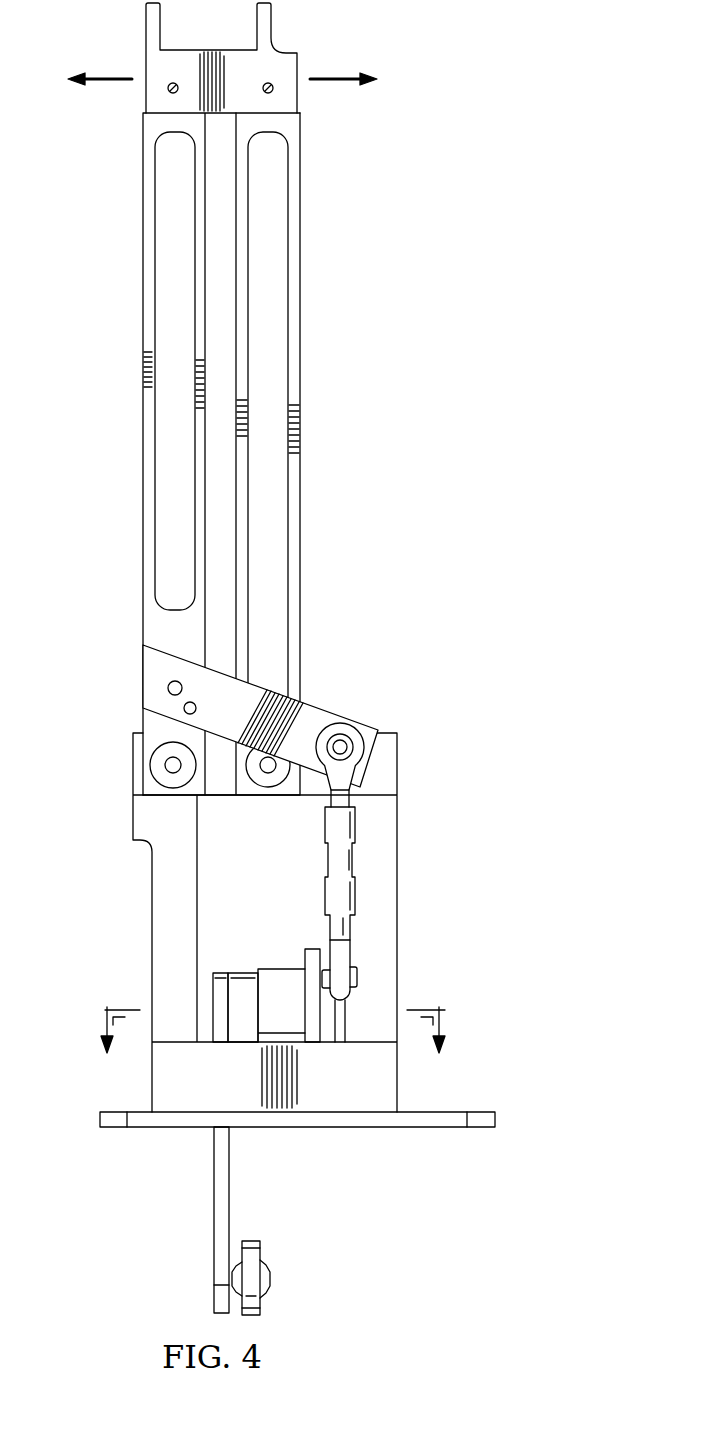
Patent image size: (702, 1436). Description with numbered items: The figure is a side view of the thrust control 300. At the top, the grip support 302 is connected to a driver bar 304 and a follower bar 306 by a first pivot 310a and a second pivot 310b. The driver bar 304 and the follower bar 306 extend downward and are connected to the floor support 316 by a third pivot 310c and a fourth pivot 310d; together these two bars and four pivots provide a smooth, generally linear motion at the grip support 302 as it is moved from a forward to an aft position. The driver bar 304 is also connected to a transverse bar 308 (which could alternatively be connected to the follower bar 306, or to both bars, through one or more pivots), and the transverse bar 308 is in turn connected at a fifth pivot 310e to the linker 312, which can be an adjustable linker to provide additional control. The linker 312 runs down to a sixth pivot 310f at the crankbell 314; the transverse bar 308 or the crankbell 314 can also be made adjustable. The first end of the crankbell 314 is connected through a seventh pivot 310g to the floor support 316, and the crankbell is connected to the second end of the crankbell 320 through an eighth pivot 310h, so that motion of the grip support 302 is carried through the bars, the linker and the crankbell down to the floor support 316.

The thrust control 300 is at (311, 657).
The grip support 302 is at (272, 22).
The driver bar 304 is at (143, 310).
The follower bar 306 is at (300, 310).
The transverse bar 308 is at (323, 709).
The first pivot 310a is at (166, 92).
The second pivot 310b is at (275, 92).
The third pivot 310c is at (170, 765).
The fourth pivot 310d is at (268, 768).
The fifth pivot 310e is at (340, 747).
The sixth pivot 310f is at (355, 980).
The seventh pivot 310g is at (220, 972).
The eighth pivot 310h is at (268, 1272).
The linker 312 is at (357, 825).
The crankbell 314 is at (312, 953).
The floor support 316 is at (497, 1118).
The second end of the crankbell 320 is at (213, 1217).